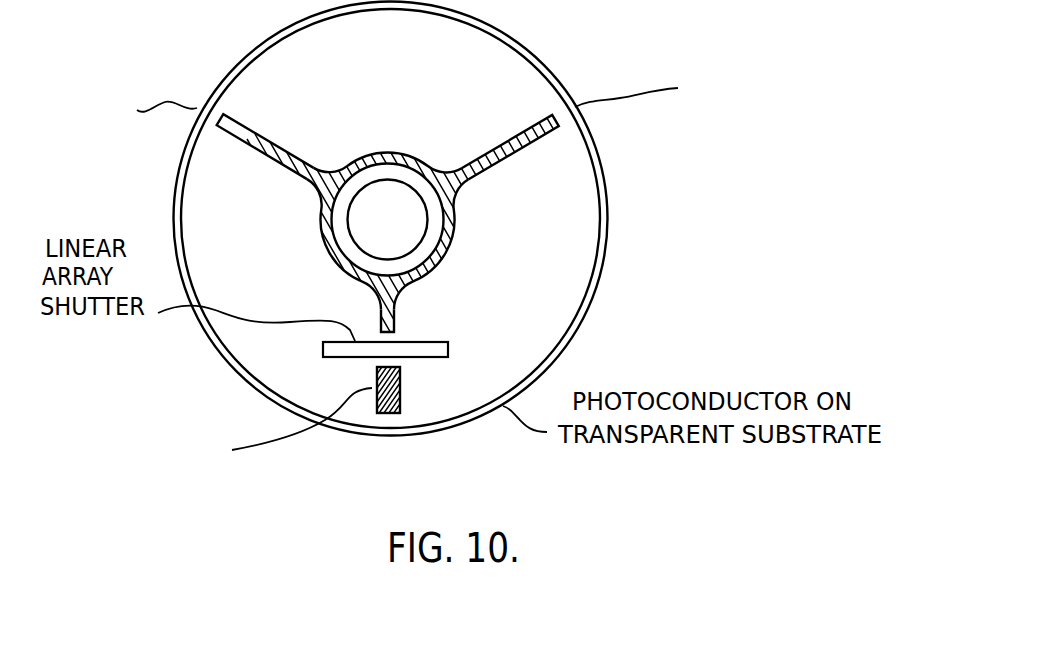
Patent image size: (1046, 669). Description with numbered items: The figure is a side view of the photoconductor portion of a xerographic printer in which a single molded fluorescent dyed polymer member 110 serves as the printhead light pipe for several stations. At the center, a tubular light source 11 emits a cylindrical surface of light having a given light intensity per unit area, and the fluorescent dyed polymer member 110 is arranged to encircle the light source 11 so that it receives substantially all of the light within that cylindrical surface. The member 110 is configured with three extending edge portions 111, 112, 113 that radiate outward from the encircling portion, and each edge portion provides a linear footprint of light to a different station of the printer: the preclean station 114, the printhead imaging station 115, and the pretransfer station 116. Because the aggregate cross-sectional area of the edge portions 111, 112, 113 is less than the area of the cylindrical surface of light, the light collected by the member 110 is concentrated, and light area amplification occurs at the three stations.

The tubular light source 11 is at (427, 227).
The molded fluorescent dyed polymer member 110 is at (440, 253).
The extending edge portion 111 is at (511, 134).
The extending edge portion 112 is at (397, 320).
The extending edge portion 113 is at (277, 144).
The preclean station 114 is at (577, 111).
The printhead imaging station 115 is at (402, 399).
The pretransfer station 116 is at (198, 115).